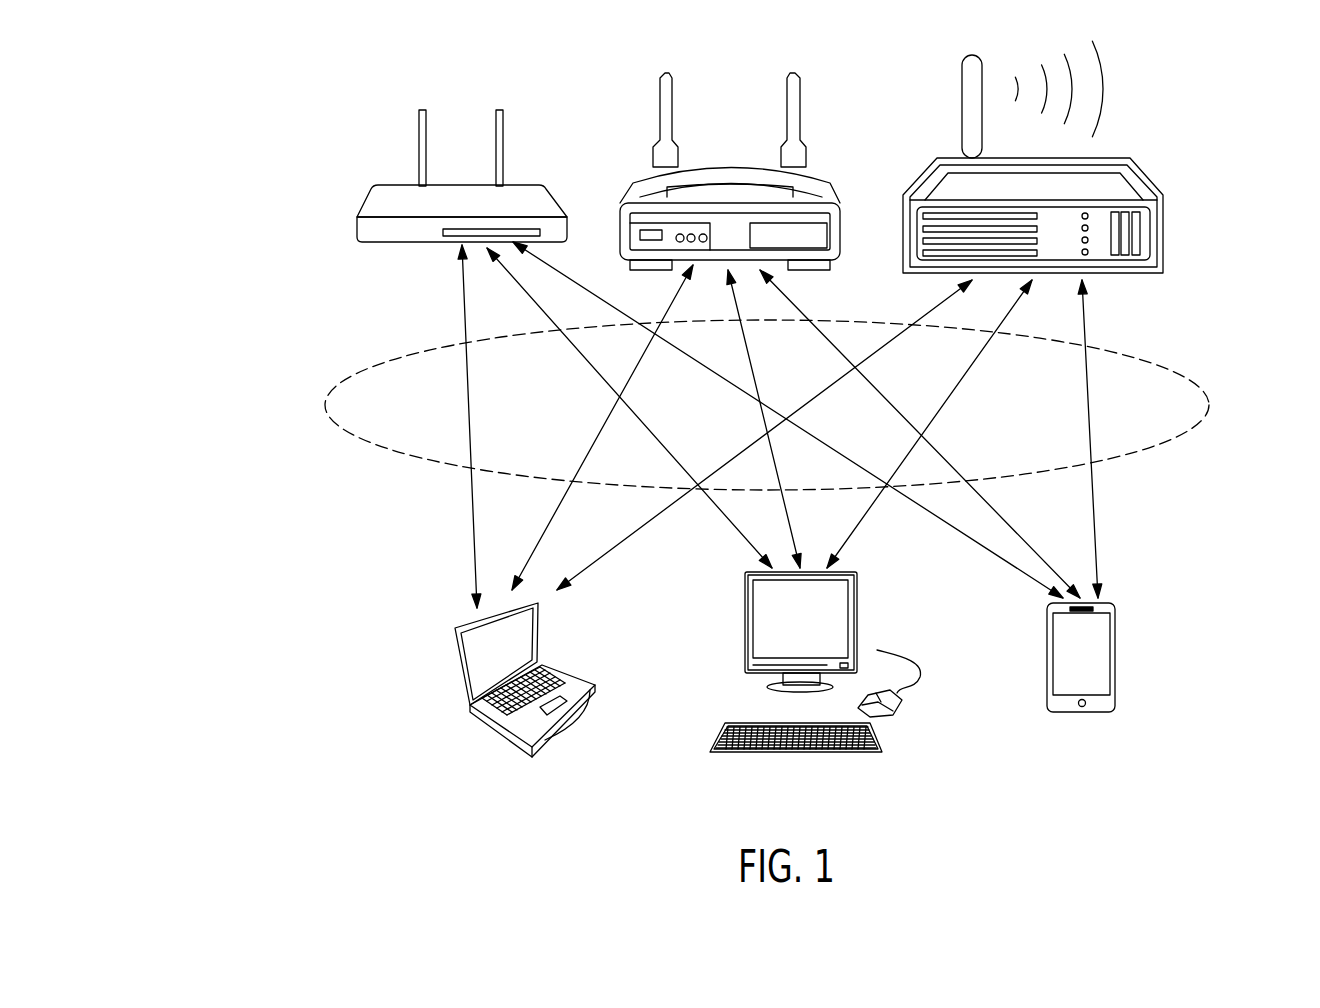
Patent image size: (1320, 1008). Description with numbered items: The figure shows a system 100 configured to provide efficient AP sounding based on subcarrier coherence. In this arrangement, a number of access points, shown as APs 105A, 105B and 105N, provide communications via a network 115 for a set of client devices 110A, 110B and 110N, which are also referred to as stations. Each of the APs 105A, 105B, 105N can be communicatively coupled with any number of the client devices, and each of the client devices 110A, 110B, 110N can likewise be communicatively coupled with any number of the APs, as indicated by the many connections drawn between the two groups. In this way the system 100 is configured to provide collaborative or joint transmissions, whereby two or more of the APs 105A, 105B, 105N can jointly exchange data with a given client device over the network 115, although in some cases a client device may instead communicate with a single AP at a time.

The system 100 is at (211, 129).
The AP 105A is at (458, 183).
The AP 105B is at (728, 160).
The AP 105N is at (1148, 172).
The client device 110A is at (502, 730).
The client device 110B is at (797, 753).
The client device 110N is at (1072, 713).
The network 115 is at (1180, 370).